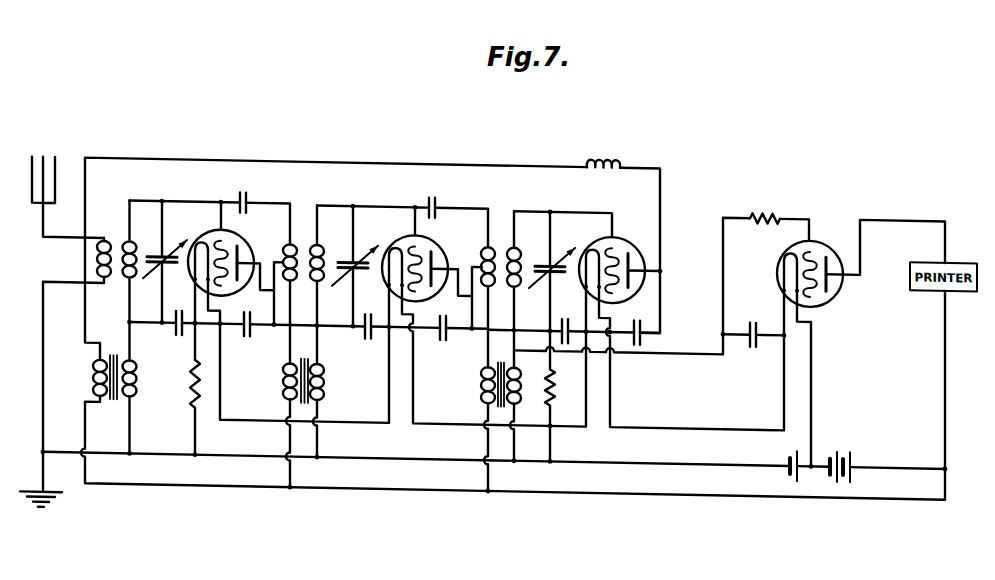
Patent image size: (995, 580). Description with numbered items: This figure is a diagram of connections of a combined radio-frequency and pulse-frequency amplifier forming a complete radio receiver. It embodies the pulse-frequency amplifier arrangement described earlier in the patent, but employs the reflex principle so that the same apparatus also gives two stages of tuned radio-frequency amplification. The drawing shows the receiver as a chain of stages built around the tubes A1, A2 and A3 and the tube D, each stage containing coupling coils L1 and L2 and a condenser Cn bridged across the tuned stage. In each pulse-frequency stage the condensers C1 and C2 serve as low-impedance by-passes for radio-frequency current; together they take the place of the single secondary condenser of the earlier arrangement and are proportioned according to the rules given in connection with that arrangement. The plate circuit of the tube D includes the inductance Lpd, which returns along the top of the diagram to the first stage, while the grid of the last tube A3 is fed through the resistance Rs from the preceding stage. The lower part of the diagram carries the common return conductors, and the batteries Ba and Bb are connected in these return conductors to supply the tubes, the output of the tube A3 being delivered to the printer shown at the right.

The first amplifier tube A1 is at (213, 235).
The second amplifier tube A2 is at (396, 233).
The third amplifier tube A3 is at (796, 231).
The detector tube D is at (596, 233).
The neutralizing condenser Cn is at (349, 203).
The condenser C1 is at (447, 341).
The condenser C2 is at (466, 344).
The primary coil L1 is at (283, 387).
The secondary coil L2 is at (331, 392).
The plate inductance coil Lpd is at (603, 180).
The grid leak resistance Rs is at (765, 208).
The filament battery Ba is at (782, 465).
The plate battery Bb is at (851, 465).